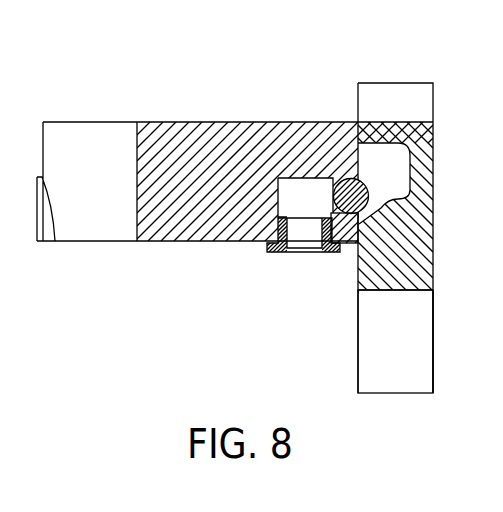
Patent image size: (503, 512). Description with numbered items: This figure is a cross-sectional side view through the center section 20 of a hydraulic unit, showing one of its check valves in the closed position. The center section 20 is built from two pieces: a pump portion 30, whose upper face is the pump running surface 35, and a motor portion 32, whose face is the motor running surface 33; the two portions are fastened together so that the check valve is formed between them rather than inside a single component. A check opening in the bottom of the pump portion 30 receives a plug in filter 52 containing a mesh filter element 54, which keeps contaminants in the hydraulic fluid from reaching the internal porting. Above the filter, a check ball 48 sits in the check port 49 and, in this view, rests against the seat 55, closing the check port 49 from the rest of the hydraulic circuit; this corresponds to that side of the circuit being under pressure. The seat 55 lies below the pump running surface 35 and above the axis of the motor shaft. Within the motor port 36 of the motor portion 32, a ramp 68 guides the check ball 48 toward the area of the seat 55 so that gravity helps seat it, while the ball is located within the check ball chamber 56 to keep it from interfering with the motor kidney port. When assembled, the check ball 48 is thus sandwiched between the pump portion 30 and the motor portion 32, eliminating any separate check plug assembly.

The center section 20 is at (253, 203).
The pump portion 30 is at (77, 189).
The motor portion 32 is at (384, 357).
The motor running surface 33 is at (433, 323).
The pump running surface 35 is at (110, 122).
The motor port 36 is at (367, 157).
The check ball 48 is at (347, 180).
The check port 49 is at (312, 195).
The plug in filter 52 is at (270, 252).
The mesh filter element 54 is at (305, 250).
The seat 55 is at (350, 222).
The check ball chamber 56 is at (397, 163).
The ramp 68 is at (404, 200).